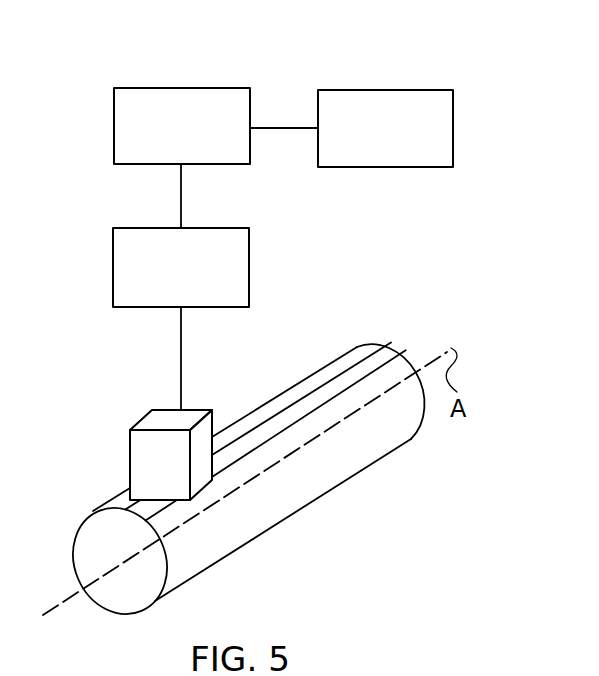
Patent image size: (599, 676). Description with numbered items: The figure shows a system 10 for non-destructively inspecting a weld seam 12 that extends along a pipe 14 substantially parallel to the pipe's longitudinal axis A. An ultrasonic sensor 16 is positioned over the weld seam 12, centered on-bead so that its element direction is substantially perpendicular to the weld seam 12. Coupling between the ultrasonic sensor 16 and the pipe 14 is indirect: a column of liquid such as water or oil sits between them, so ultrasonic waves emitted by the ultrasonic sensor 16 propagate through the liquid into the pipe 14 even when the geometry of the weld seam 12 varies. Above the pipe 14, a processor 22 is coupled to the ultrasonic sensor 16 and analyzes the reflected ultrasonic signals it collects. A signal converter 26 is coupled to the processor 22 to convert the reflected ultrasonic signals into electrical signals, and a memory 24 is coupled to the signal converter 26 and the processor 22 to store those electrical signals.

The system 10 is at (122, 57).
The weld seam 12 is at (387, 357).
The pipe 14 is at (263, 411).
The ultrasonic sensor 16 is at (160, 420).
The processor 22 is at (250, 265).
The memory 24 is at (456, 128).
The signal converter 26 is at (113, 123).